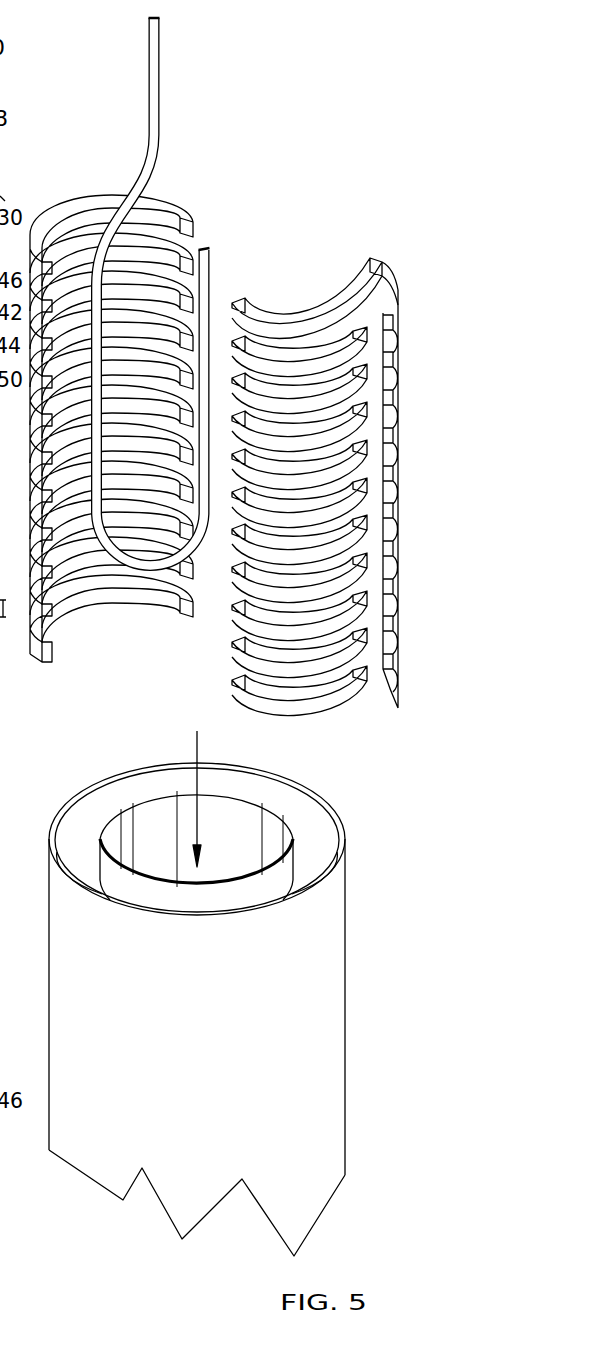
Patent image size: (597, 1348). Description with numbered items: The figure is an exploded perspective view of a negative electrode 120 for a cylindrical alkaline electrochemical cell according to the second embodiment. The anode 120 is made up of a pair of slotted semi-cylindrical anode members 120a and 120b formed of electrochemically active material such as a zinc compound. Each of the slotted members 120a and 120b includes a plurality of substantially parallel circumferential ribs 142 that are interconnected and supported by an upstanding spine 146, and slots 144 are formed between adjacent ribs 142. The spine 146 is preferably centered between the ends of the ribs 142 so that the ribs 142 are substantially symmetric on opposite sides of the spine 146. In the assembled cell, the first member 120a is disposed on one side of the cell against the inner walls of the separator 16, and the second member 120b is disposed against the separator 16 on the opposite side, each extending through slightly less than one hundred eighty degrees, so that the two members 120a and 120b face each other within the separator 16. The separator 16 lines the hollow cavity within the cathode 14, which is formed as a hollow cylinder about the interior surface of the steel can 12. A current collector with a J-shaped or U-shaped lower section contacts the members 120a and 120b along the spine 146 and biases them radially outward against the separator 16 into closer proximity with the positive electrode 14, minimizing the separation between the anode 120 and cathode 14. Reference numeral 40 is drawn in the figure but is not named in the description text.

The steel can 12 is at (72, 1035).
The cathode 14 is at (300, 835).
The separator 16 is at (153, 793).
The wire 40 is at (153, 70).
The negative electrode 120 is at (400, 257).
The first slotted semi-cylindrical anode member 120a is at (119, 166).
The second slotted semi-cylindrical anode member 120b is at (348, 263).
The circumferential ribs 142 is at (214, 455).
The slots 144 is at (88, 577).
The spine 146 is at (62, 247).